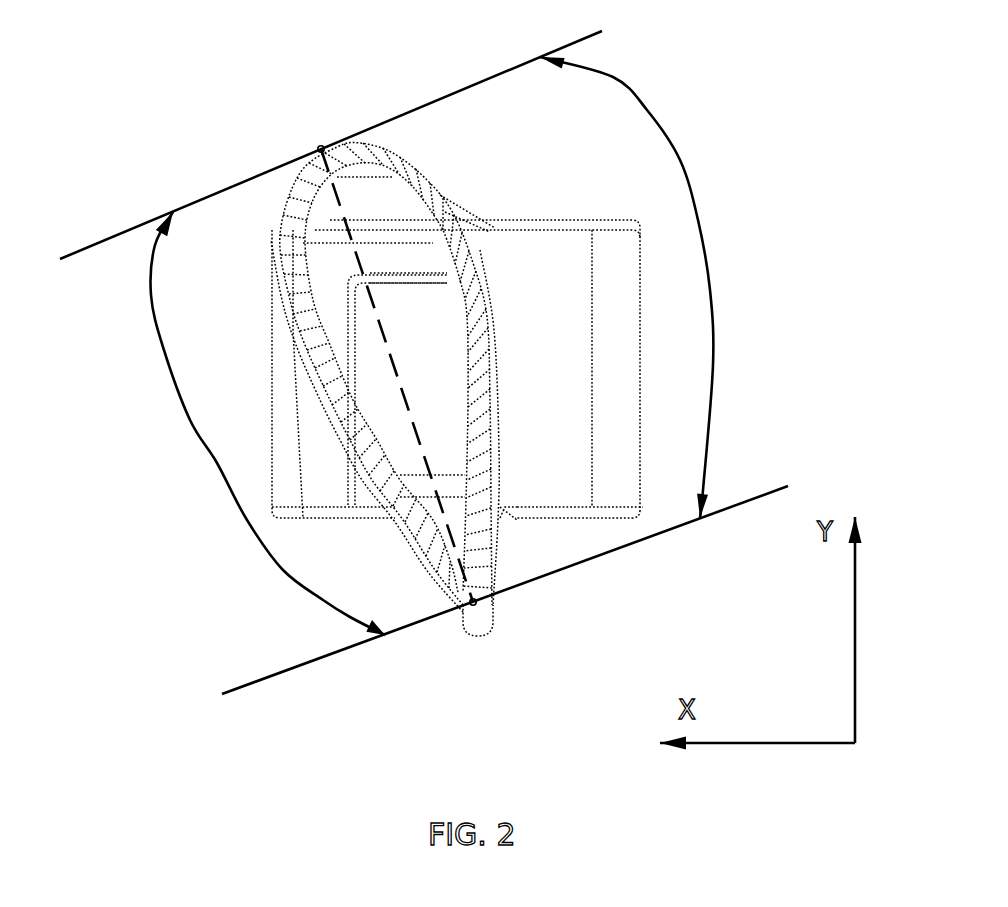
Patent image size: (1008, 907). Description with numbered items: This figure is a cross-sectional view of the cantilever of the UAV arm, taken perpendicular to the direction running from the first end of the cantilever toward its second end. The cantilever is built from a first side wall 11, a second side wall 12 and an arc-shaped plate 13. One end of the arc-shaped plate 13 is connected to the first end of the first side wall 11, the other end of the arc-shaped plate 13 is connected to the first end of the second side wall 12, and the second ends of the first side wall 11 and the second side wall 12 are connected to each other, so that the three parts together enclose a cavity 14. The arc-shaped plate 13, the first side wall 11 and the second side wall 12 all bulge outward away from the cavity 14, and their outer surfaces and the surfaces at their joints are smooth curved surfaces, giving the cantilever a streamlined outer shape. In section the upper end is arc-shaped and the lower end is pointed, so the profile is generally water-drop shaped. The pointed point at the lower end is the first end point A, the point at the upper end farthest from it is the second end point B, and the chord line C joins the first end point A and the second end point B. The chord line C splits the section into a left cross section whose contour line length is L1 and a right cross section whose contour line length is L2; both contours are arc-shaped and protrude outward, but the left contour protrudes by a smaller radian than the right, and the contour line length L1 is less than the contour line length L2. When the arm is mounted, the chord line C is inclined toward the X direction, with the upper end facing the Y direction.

The first side wall 11 is at (328, 363).
The second side wall 12 is at (473, 340).
The arc-shaped plate 13 is at (352, 153).
The cavity 14 is at (385, 225).
The first end point A is at (321, 149).
The second end point B is at (477, 600).
The chord line C is at (413, 427).
The contour line length of the left cross section L1 is at (268, 423).
The contour line length of the right cross section L2 is at (640, 287).